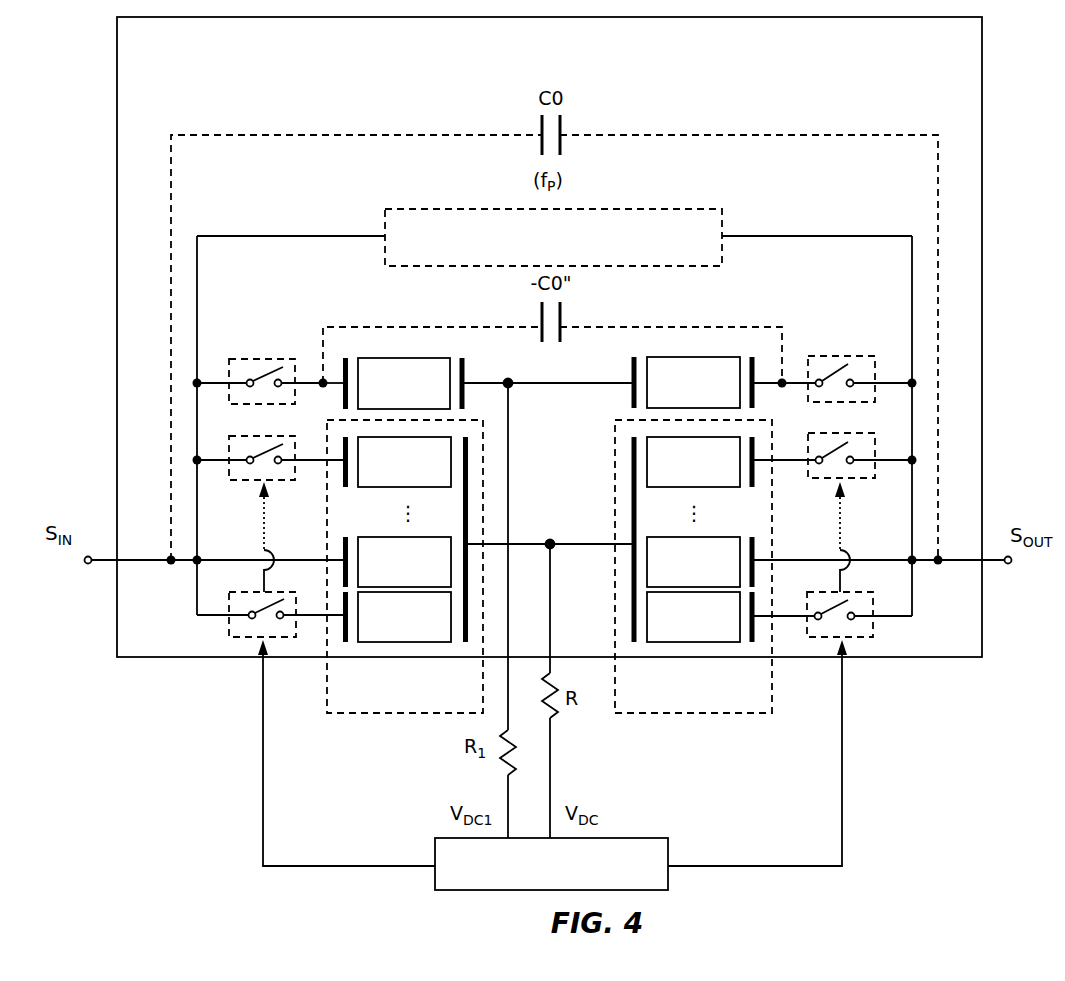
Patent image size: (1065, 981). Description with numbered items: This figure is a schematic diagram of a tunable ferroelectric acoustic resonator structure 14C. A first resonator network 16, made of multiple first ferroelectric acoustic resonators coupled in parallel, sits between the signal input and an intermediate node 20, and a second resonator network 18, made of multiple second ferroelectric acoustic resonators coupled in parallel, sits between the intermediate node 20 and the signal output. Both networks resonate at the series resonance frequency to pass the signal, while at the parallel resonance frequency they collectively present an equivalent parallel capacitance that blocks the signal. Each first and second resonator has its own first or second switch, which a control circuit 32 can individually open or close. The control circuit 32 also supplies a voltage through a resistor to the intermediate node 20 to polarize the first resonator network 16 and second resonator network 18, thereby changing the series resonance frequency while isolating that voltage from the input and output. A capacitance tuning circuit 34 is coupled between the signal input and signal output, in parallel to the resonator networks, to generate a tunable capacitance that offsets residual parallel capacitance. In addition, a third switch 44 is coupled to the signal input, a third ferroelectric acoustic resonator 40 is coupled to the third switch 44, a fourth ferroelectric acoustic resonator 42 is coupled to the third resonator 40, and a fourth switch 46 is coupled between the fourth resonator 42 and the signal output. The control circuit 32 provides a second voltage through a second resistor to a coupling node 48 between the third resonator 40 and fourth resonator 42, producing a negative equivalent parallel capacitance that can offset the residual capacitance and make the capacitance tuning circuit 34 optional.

The tunable ferroelectric acoustic resonator structure 14C is at (174, 78).
The capacitance tuning circuit 34 is at (541, 258).
The third ferroelectric acoustic resonator 40 is at (391, 395).
The fourth ferroelectric acoustic resonator 42 is at (681, 395).
The third switch 44 is at (248, 357).
The fourth switch 46 is at (845, 355).
The coupling node 48 is at (510, 387).
The intermediate node 20 is at (551, 540).
The first resonator network 16 is at (355, 713).
The second resonator network 18 is at (737, 713).
The control circuit 32 is at (660, 875).